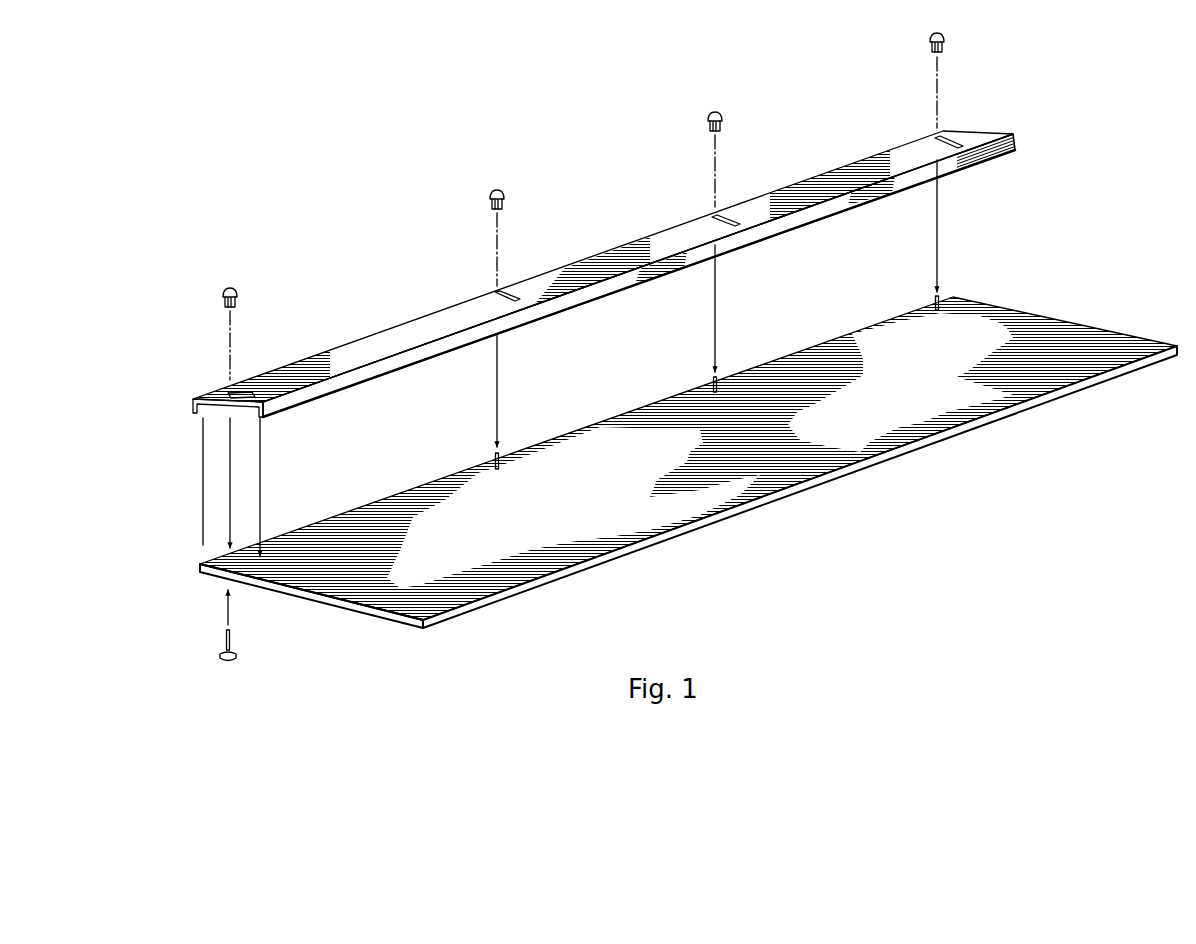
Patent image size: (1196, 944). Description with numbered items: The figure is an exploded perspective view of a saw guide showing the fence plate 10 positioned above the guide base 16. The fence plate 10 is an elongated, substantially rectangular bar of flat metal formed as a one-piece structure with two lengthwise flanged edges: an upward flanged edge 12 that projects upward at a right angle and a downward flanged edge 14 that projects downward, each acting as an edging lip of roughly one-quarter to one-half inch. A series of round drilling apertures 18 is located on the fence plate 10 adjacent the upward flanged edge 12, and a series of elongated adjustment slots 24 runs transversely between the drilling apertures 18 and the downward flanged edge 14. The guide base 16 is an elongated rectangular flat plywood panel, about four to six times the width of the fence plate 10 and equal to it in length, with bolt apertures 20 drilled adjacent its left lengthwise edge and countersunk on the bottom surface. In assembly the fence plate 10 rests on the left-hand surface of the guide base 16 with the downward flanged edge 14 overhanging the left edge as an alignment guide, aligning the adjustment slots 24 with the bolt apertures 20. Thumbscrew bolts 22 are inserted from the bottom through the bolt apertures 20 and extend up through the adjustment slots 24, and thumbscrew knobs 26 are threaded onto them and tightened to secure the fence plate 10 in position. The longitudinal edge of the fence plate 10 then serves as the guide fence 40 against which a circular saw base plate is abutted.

The fence plate 10 is at (445, 309).
The upward flanged edge 12 is at (615, 276).
The downward flanged edge 14 is at (192, 405).
The guide base 16 is at (635, 497).
The drilling apertures 18 is at (263, 398).
The bolt apertures 20 is at (200, 566).
The thumbscrew bolts 22 is at (500, 452).
The adjustment slots 24 is at (242, 391).
The thumbscrew knobs 26 is at (223, 293).
The guide fence 40 is at (353, 380).